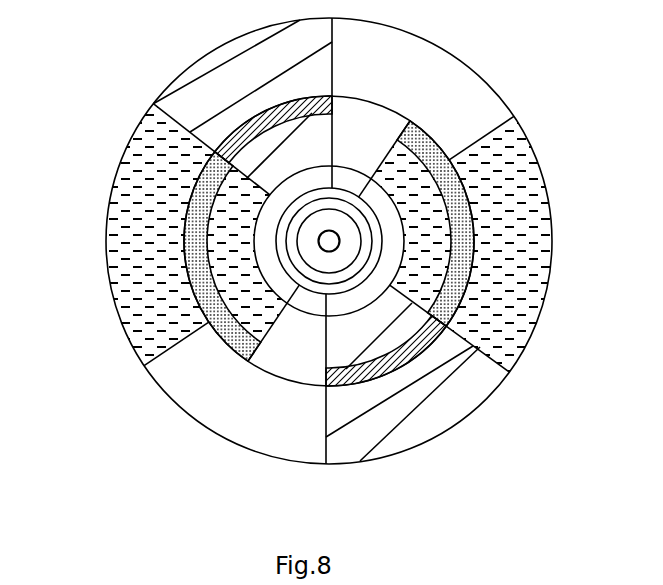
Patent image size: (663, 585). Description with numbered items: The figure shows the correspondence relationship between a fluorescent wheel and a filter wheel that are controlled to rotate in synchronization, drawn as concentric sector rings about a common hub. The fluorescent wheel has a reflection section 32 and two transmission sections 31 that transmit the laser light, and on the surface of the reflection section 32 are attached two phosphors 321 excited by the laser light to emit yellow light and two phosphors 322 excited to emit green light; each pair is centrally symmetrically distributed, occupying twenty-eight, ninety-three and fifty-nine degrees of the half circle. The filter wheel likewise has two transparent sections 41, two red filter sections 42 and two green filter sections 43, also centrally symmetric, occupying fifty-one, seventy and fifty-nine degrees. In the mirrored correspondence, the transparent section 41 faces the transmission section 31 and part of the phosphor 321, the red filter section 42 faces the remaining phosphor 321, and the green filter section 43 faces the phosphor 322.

The transmission section 31 is at (348, 133).
The reflection section 32 is at (420, 240).
The phosphor excited by the laser light to emit yellow light 321 is at (427, 145).
The phosphor excited by the laser light to emit green light 322 is at (233, 132).
The transparent section 41 is at (355, 85).
The red filter section 42 is at (145, 215).
The green filter section 43 is at (240, 87).